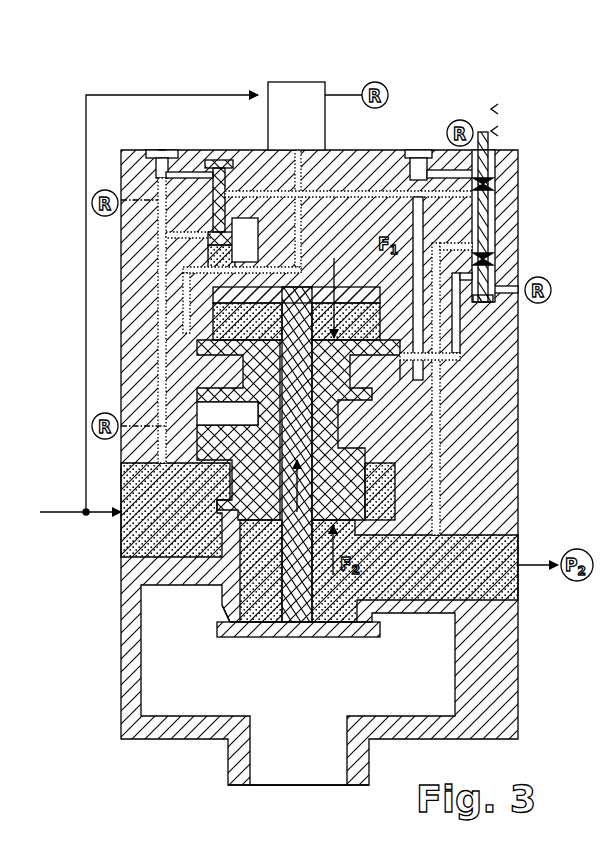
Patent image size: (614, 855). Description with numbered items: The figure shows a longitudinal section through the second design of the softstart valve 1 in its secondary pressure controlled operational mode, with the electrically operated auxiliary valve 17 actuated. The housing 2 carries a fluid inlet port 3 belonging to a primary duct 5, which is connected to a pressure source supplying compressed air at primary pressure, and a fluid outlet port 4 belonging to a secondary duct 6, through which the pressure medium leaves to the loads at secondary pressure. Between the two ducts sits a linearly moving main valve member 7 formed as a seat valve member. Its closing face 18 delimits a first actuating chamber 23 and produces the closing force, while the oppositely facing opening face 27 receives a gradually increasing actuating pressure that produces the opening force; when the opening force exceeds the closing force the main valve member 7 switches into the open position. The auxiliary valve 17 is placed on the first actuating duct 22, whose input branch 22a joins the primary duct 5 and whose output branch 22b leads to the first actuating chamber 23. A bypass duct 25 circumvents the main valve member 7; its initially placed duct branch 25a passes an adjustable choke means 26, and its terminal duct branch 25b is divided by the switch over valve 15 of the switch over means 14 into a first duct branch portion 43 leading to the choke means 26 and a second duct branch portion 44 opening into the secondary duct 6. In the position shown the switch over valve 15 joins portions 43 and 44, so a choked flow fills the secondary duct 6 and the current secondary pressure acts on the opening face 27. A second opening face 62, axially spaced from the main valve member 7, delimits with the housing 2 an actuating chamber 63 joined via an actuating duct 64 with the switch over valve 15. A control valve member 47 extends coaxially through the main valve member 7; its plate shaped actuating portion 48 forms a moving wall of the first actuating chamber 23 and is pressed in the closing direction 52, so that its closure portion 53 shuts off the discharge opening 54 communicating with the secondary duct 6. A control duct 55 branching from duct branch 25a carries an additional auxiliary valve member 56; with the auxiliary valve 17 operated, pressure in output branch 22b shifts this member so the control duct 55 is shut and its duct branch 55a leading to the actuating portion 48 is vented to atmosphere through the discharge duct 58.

The softstart valve 1 is at (516, 130).
The housing 2 is at (505, 658).
The fluid inlet port 3 is at (123, 545).
The fluid outlet port 4 is at (518, 540).
The primary duct 5 is at (140, 518).
The secondary duct 6 is at (487, 573).
The main valve member 7 is at (330, 428).
The switch over means 14 is at (496, 183).
The switch over valve 15 is at (496, 232).
The auxiliary valve 17 is at (308, 128).
The closing face 18 is at (352, 325).
The first actuating duct 22 is at (247, 217).
The input branch 22a is at (86, 116).
The output branch 22b is at (298, 212).
The first actuating chamber 23 is at (230, 327).
The bypass duct 25 is at (343, 191).
The initially placed duct branch 25a is at (162, 310).
The terminal duct branch 25b is at (440, 370).
The choke means 26 is at (157, 150).
The opening face 27 is at (267, 540).
The first duct branch portion 43 is at (390, 191).
The second duct branch portion 44 is at (440, 325).
The control valve member 47 is at (300, 577).
The actuating portion 48 is at (235, 280).
The closing direction 52 is at (300, 482).
The closure portion 53 is at (272, 637).
The discharge opening 54 is at (248, 622).
The control duct 55 is at (183, 237).
The duct branch 55a is at (298, 233).
The additional auxiliary valve member 56 is at (210, 243).
The discharge duct 58 is at (138, 207).
The second opening face 62 is at (383, 403).
The actuating chamber 63 is at (200, 405).
The actuating duct 64 is at (488, 215).